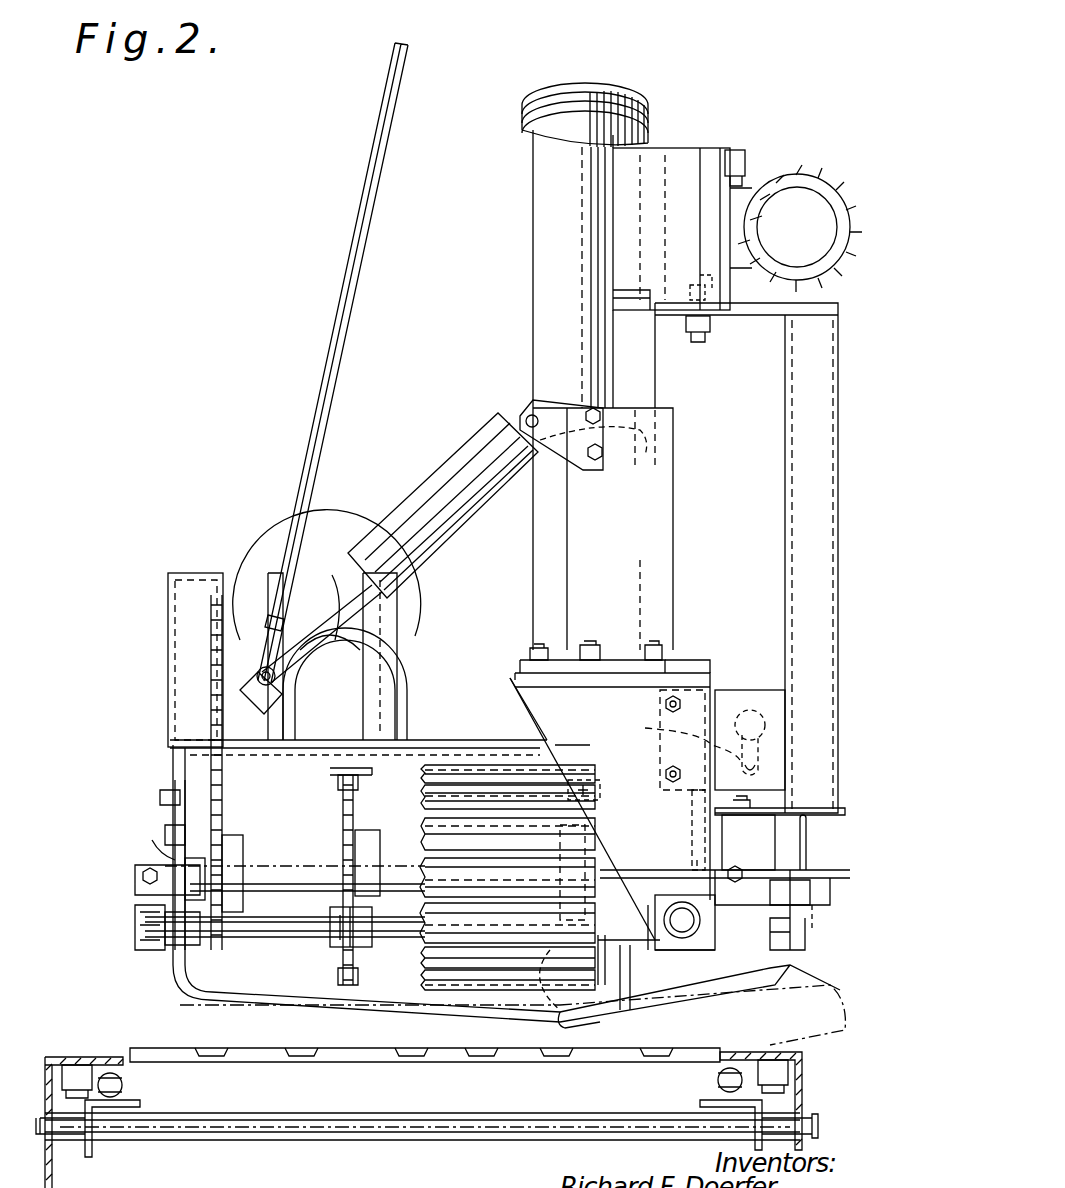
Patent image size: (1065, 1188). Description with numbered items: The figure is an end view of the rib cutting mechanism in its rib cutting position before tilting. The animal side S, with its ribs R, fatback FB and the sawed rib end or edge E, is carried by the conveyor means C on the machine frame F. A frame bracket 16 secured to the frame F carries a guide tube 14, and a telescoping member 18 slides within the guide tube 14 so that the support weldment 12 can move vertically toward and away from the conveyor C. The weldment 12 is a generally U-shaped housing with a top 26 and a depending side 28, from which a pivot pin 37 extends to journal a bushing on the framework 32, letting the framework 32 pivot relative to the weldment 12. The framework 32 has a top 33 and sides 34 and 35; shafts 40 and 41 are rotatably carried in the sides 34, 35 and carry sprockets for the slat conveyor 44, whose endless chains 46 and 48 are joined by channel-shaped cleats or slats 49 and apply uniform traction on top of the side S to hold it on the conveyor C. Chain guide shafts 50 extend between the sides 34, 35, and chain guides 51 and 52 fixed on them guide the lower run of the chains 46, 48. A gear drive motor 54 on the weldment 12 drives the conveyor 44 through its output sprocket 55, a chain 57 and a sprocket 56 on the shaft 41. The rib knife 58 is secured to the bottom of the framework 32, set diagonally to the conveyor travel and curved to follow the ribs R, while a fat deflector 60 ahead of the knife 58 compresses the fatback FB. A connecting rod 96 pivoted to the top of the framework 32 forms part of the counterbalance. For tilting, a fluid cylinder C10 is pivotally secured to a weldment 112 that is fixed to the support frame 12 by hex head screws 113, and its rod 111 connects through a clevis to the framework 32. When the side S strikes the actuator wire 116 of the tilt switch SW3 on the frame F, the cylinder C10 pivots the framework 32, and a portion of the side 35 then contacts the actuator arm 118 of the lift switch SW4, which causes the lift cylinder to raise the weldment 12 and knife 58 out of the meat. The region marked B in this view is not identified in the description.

The guide tube 14 is at (548, 195).
The frame bracket 16 is at (682, 150).
The frame F is at (815, 178).
The weldment 112 is at (665, 518).
The telescoping member 18 is at (545, 528).
The fluid cylinder C10 is at (458, 458).
The tie rod or connecting rod 96 is at (345, 267).
The gear drive motor 54 is at (275, 520).
The cylinder rod 111 is at (340, 590).
The output sprocket 55 is at (210, 600).
The chain 57 is at (225, 785).
The top 33 is at (455, 740).
The framework 32 is at (500, 720).
The top 26 is at (515, 672).
The side 28 is at (572, 719).
The hex head screws 113 is at (660, 648).
The support weldment 12 is at (699, 662).
The actuator arm 118 is at (671, 733).
The endless chain 48 is at (585, 792).
The side 35 is at (700, 800).
The lift switch SW4 is at (750, 695).
The tilt switch SW3 is at (770, 828).
The actuator wire 116 is at (740, 965).
The pivot pin 37 is at (682, 935).
The chain guide 52 is at (600, 945).
The slat conveyor 44 is at (414, 798).
The channel-shaped cleats or slats 49 is at (430, 836).
The shaft 41 is at (298, 833).
The shaft 40 is at (405, 892).
The endless chain 46 is at (345, 800).
The chain guide 51 is at (335, 945).
The sprocket 56 is at (228, 848).
The side 34 is at (175, 800).
The chain guide shafts 50 is at (283, 933).
The rib knife 58 is at (237, 1010).
The fat deflector 60 is at (790, 985).
The ribs R is at (314, 1004).
The bar B is at (385, 1048).
The animal side S is at (296, 1046).
The side or edge E is at (582, 1000).
The fatback FB is at (692, 1030).
The conveyor means C is at (155, 1055).